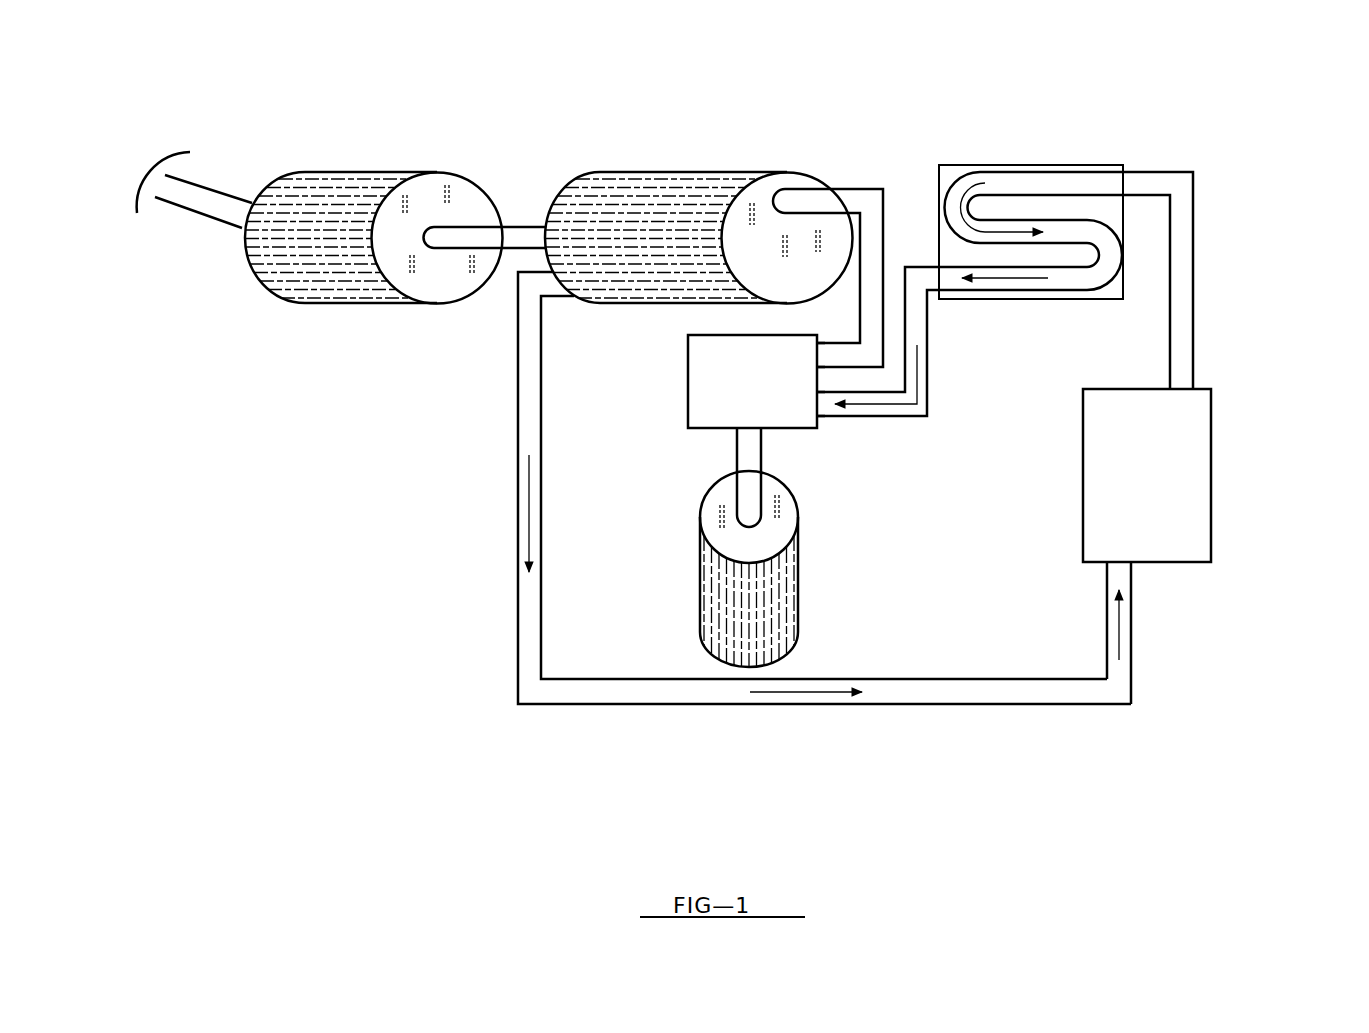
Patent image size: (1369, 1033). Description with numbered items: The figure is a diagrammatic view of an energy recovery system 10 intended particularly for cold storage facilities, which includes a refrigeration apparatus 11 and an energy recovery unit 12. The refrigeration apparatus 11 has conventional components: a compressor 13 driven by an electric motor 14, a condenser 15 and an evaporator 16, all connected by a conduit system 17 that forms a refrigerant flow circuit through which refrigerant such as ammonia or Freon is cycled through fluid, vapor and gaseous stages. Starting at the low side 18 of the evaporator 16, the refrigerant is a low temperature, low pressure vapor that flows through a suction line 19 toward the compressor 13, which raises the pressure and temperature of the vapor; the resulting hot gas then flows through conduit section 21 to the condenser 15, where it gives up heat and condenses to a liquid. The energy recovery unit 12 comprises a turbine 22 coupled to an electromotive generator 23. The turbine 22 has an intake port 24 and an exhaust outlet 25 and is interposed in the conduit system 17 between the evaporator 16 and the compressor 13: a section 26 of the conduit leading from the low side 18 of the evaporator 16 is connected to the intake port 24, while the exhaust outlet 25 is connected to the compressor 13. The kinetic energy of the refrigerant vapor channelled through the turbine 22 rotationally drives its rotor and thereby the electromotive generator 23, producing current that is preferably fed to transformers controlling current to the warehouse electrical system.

The energy recovery system 10 is at (897, 150).
The refrigeration apparatus 11 is at (589, 328).
The energy recovery unit 12 is at (673, 510).
The compressor 13 is at (650, 185).
The electric motor 14 is at (360, 182).
The condenser 15 is at (1200, 452).
The evaporator 16 is at (1033, 167).
The conduit system 17 is at (973, 707).
The low side of the evaporator 18 is at (950, 283).
The suction line 19 is at (872, 267).
The conduit section 21 is at (1125, 640).
The turbine 22 is at (700, 392).
The electromotive generator 23 is at (785, 580).
The intake port 24 is at (818, 406).
The exhaust outlet 25 is at (818, 357).
The conduit section 26 is at (920, 388).